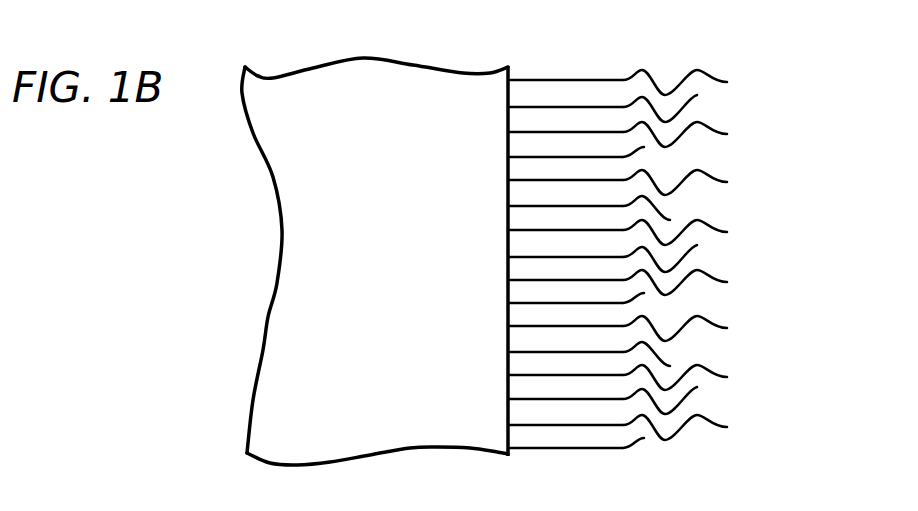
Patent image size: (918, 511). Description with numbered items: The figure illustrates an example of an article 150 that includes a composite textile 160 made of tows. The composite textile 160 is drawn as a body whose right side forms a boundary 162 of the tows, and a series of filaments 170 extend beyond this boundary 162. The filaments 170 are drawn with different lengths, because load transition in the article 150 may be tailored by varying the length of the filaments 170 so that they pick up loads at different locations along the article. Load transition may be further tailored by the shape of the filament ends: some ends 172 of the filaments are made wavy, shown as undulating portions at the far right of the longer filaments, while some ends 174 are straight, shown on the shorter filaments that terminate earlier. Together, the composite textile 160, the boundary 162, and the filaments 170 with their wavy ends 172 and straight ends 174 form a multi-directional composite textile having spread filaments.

The article 150 is at (150, 189).
The composite textile 160 is at (407, 236).
The boundary 162 is at (507, 357).
The filaments 170 is at (550, 78).
The wavy ends 172 is at (715, 74).
The straight ends 174 is at (634, 443).